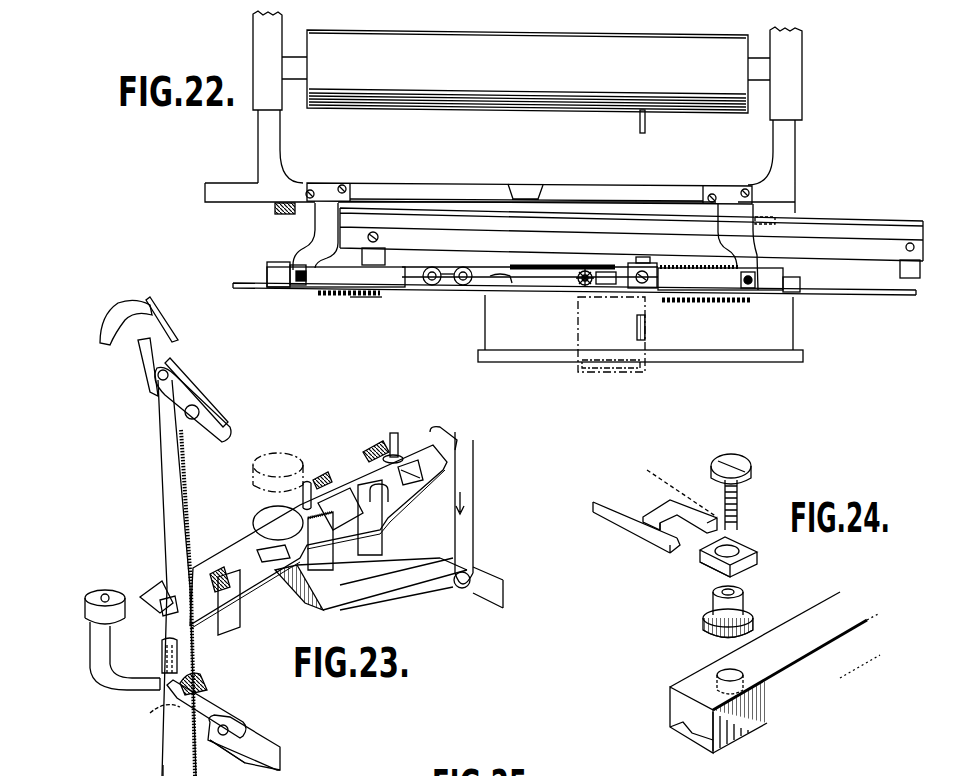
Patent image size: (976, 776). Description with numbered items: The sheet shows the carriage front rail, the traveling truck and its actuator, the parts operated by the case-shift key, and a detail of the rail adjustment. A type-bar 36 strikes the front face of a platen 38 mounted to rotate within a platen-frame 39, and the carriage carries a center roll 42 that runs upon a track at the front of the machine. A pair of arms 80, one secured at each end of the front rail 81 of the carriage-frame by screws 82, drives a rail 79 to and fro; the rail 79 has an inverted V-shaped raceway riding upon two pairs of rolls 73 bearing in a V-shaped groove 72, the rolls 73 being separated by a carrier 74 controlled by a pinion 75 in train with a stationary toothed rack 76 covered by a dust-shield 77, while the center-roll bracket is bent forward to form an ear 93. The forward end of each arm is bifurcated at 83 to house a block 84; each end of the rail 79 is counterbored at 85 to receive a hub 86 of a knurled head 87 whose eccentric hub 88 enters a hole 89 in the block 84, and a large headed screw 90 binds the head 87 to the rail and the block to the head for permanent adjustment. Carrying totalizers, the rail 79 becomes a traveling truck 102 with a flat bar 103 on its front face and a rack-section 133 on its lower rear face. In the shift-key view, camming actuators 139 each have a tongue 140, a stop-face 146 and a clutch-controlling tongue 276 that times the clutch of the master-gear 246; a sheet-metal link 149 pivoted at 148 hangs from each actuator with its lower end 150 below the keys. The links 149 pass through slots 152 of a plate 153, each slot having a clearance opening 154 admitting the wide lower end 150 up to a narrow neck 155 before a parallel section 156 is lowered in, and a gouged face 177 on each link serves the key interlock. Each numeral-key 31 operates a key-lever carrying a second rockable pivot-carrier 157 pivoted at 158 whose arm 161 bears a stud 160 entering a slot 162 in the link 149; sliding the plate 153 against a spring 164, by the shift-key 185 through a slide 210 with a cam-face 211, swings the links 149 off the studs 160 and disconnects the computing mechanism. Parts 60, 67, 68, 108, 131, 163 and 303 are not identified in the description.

In FIG. 22, the platen-frame 39 is at (527, 112).
In FIG. 22, the platen 38 is at (526, 71).
In FIG. 22, the type-bar 36 is at (626, 128).
In FIG. 22, the front rail 81 is at (529, 193).
In FIG. 22, the screws 82 is at (527, 177).
In FIG. 22, the center roll 42 is at (523, 229).
In FIG. 22, the arms 80 is at (525, 246).
In FIG. 24, the arms 80 is at (655, 517).
In FIG. 22, the block 84 is at (282, 262).
In FIG. 24, the block 84 is at (745, 557).
In FIG. 22, the large headed screw 90 is at (523, 299).
In FIG. 24, the large headed screw 90 is at (744, 492).
In FIG. 22, the rail 79 is at (533, 277).
In FIG. 24, the rail 79 is at (775, 672).
In FIG. 22, the V-shaped groove 72 is at (578, 264).
In FIG. 22, the totalizer-carrying flat bar 103 is at (345, 311).
In FIG. 22, the traveling truck 102 is at (371, 313).
In FIG. 22, the strip 108 is at (556, 332).
In FIG. 22, the rolls 73 is at (447, 293).
In FIG. 22, the carrier 74 is at (504, 296).
In FIG. 22, the carriage body 67 is at (614, 328).
In FIG. 22, the base plate 131 is at (640, 371).
In FIG. 22, the slot 68 is at (588, 346).
In FIG. 22, the bar 303 is at (617, 381).
In FIG. 22, the master-gear 246 is at (661, 330).
In FIG. 22, the pinion 75 is at (572, 295).
In FIG. 22, the rack-section 133 is at (613, 298).
In FIG. 22, the stationary toothed rack 76 is at (562, 249).
In FIG. 22, the ear 93 is at (640, 258).
In FIG. 22, the dust-shield 77 is at (700, 249).
In FIG. 23, the clutch-controlling tongue 276 is at (112, 319).
In FIG. 23, the stop-face 146 is at (181, 319).
In FIG. 23, the camming actuators 139 is at (168, 367).
In FIG. 23, the pivot 148 is at (196, 385).
In FIG. 23, the tongue 140 is at (212, 404).
In FIG. 23, the sheet-metal link 149 is at (160, 578).
In FIG. 23, the shift-key 185 is at (260, 478).
In FIG. 23, the plate 153 is at (318, 537).
In FIG. 23, the slots 152 is at (303, 525).
In FIG. 23, the clearance opening 154 is at (206, 577).
In FIG. 23, the narrow neck 155 is at (228, 603).
In FIG. 23, the parallel section 156 is at (148, 584).
In FIG. 23, the face 177 is at (153, 616).
In FIG. 23, the numeral-keys 31 is at (107, 633).
In FIG. 23, the tube 60 is at (152, 657).
In FIG. 23, the stud 160 is at (212, 674).
In FIG. 23, the arm 161 is at (217, 709).
In FIG. 23, the pivot 158 is at (250, 741).
In FIG. 23, the slot 162 is at (147, 710).
In FIG. 23, the lower end 150 is at (149, 766).
In FIG. 23, the second rockable pivot-carrier 157 is at (220, 758).
In FIG. 23, the spring 164 is at (347, 461).
In FIG. 23, the pin 163 is at (407, 438).
In FIG. 23, the cam-face 211 is at (471, 443).
In FIG. 23, the slide 210 is at (457, 510).
In FIG. 24, the bifurcated end 83 is at (667, 507).
In FIG. 24, the hole 89 is at (698, 571).
In FIG. 24, the hub 88 is at (706, 600).
In FIG. 24, the knurled head 87 is at (746, 612).
In FIG. 24, the hub 86 is at (717, 645).
In FIG. 24, the counterbore 85 is at (746, 670).